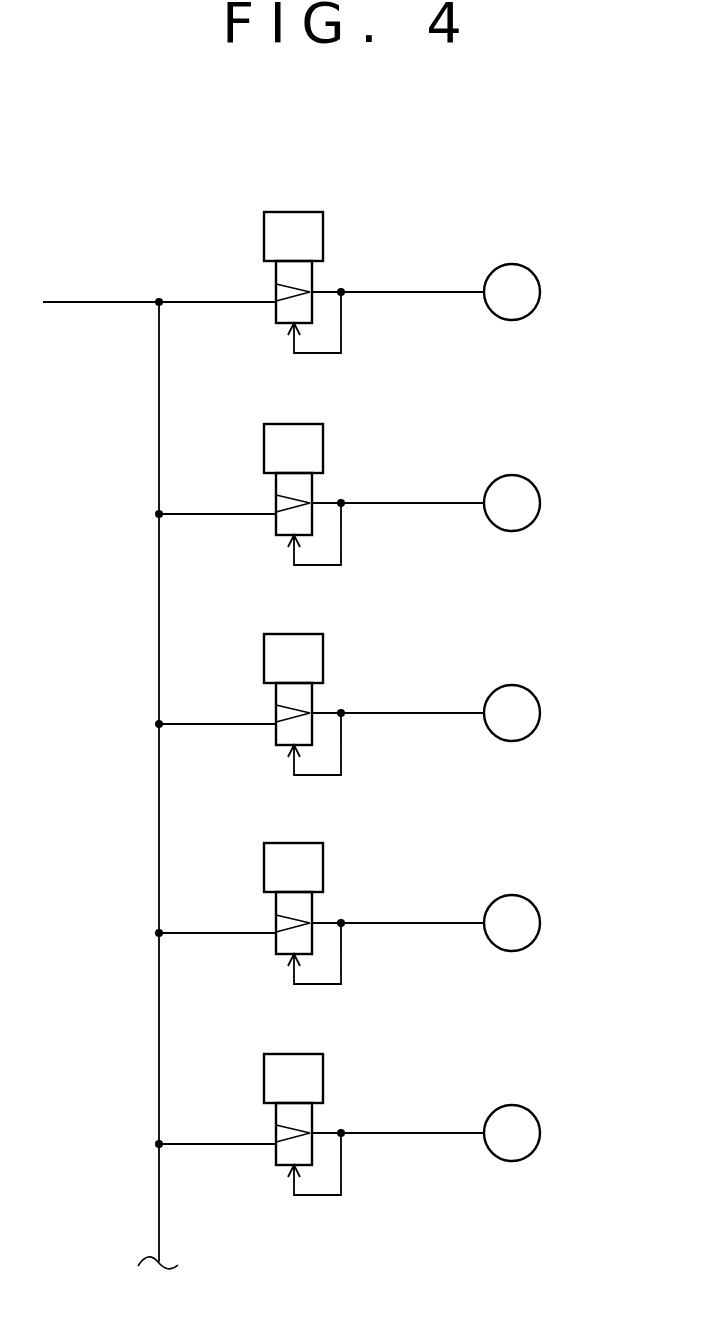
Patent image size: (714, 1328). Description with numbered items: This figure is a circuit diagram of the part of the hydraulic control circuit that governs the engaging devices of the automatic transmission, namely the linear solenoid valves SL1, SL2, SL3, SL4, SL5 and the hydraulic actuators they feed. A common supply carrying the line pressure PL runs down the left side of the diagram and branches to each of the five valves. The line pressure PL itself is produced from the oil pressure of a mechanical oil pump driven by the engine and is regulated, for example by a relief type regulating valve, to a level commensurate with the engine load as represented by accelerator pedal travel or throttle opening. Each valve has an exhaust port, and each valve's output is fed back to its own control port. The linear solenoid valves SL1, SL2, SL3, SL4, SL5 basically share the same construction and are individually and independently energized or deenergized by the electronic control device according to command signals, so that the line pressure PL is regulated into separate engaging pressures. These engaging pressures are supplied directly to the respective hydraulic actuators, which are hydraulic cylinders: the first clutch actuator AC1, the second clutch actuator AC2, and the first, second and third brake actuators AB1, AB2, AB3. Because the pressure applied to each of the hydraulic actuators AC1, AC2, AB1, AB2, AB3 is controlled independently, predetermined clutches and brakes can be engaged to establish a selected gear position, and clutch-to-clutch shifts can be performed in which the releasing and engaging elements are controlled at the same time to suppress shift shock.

The line pressure PL is at (110, 767).
The linear solenoid valve SL1 is at (321, 280).
The linear solenoid valve SL2 is at (321, 492).
The linear solenoid valve SL3 is at (321, 702).
The linear solenoid valve SL4 is at (321, 911).
The linear solenoid valve SL5 is at (321, 1122).
The hydraulic actuator of clutch C1 AC1 is at (510, 272).
The hydraulic actuator of clutch C2 AC2 is at (510, 483).
The hydraulic actuator of brake B1 AB1 is at (510, 693).
The hydraulic actuator of brake B2 AB2 is at (510, 903).
The hydraulic actuator of brake B3 AB3 is at (510, 1113).